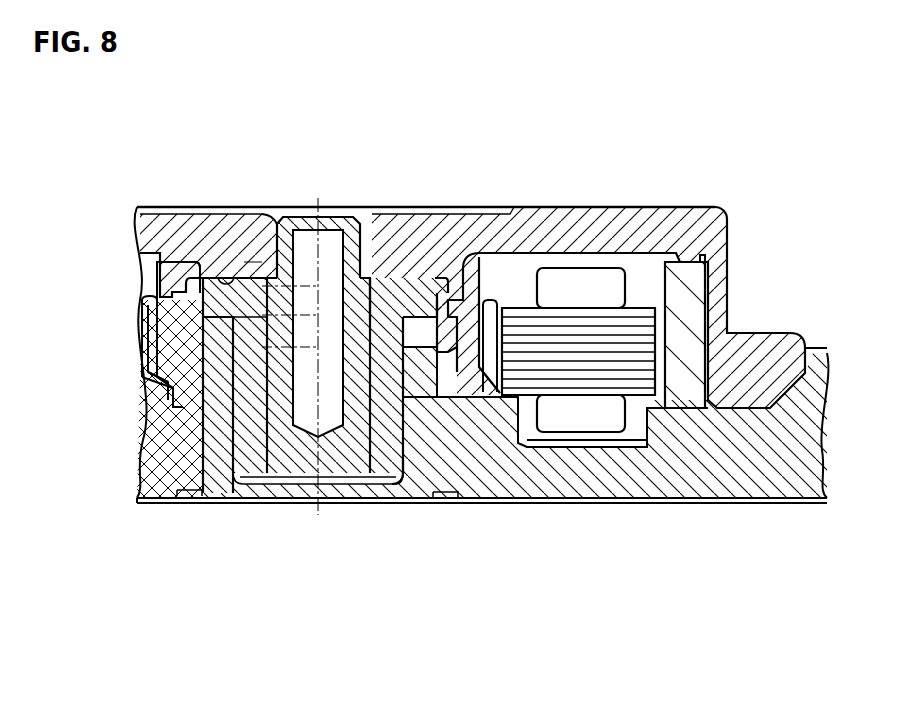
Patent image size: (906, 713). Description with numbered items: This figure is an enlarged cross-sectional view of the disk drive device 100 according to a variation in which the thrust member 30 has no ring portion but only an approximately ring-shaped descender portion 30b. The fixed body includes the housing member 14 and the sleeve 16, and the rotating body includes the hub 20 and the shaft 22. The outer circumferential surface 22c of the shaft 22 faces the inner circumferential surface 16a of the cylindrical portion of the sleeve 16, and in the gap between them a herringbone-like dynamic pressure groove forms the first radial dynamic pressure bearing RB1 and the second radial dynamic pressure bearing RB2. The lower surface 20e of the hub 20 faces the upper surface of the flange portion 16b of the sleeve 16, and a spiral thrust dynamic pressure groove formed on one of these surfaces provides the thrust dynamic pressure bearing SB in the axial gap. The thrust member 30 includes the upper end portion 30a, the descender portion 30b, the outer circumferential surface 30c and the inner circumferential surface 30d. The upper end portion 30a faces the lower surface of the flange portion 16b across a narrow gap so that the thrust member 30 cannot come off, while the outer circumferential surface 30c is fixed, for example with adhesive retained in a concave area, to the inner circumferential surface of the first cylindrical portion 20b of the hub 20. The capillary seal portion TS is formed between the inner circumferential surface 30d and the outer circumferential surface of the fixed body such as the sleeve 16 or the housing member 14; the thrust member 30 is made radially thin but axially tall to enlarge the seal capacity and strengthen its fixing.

The capillary seal portion TS is at (190, 276).
The flange portion 16b is at (206, 290).
The lower surface 20e is at (226, 276).
The thrust dynamic pressure bearing SB is at (250, 276).
The shaft 22 is at (282, 222).
The outer circumferential surface 22c is at (371, 276).
The second radial dynamic pressure bearing RB2 is at (418, 268).
The first cylindrical portion 20b is at (466, 275).
The hub 20 is at (538, 232).
The upper end portion 30a is at (152, 268).
The thrust member 30 is at (150, 296).
The descender portion 30b is at (145, 350).
The outer circumferential surface 30c is at (150, 400).
The inner circumferential surface 30d is at (148, 420).
The housing member 14 is at (208, 440).
The sleeve 16 is at (234, 456).
The inner circumferential surface of the cylindrical portion 16a is at (280, 470).
The first radial dynamic pressure bearing RB1 is at (392, 450).
The disk drive device 100 is at (472, 614).